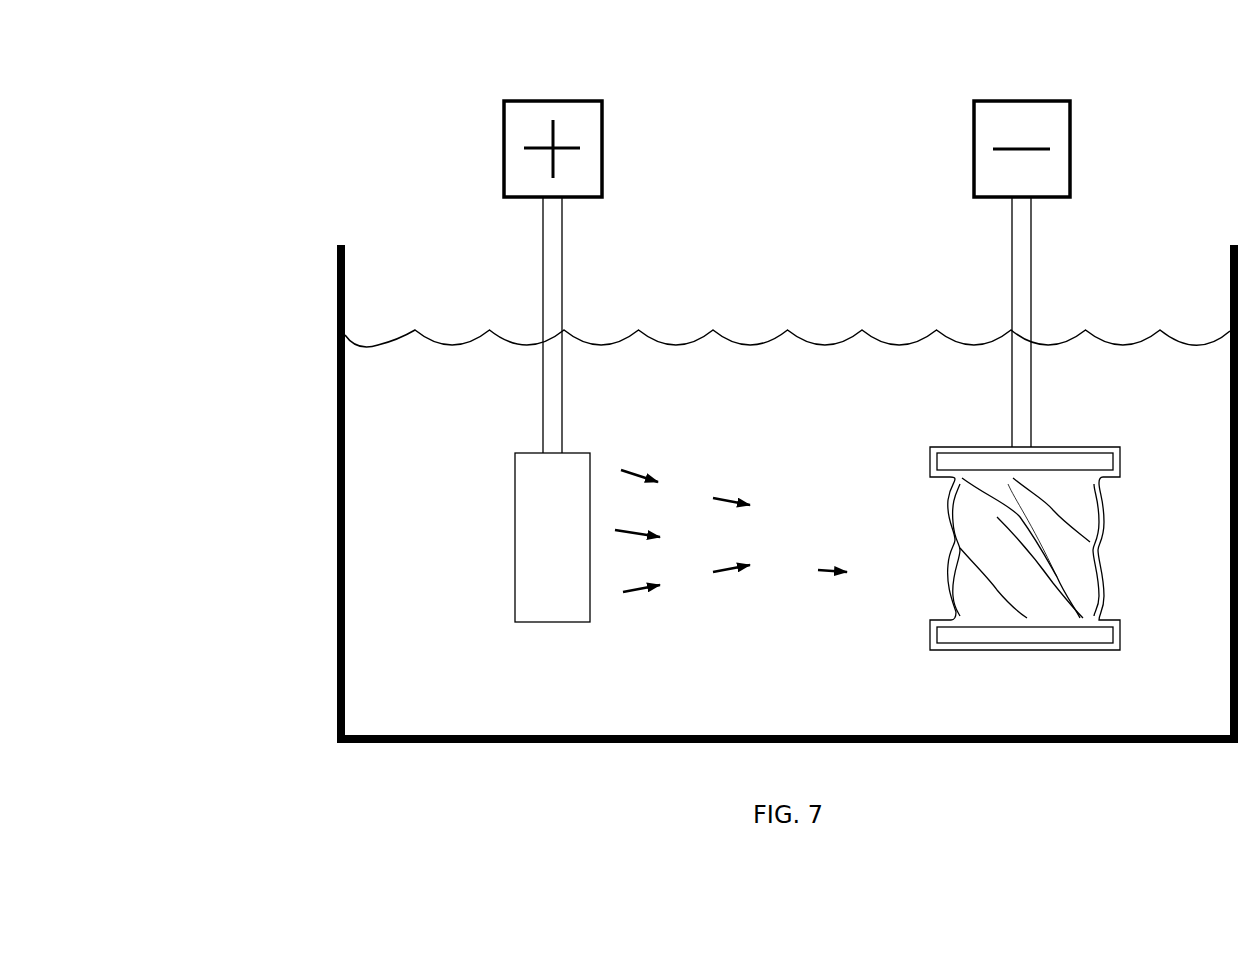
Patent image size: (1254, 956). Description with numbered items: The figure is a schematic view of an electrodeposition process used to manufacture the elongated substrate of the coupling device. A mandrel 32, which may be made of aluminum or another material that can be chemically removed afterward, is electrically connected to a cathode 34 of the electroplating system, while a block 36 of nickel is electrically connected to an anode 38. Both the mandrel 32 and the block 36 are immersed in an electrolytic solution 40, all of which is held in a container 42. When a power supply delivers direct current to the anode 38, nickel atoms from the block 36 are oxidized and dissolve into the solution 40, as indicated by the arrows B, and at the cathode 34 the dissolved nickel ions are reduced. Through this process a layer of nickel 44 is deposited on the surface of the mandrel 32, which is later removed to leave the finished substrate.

The mandrel 32 is at (1068, 498).
The cathode 34 is at (1044, 108).
The block 36 is at (560, 502).
The anode 38 is at (537, 107).
The electrolytic solution 40 is at (782, 689).
The container 42 is at (338, 648).
The layer of nickel 44 is at (948, 527).
The arrows B is at (682, 531).